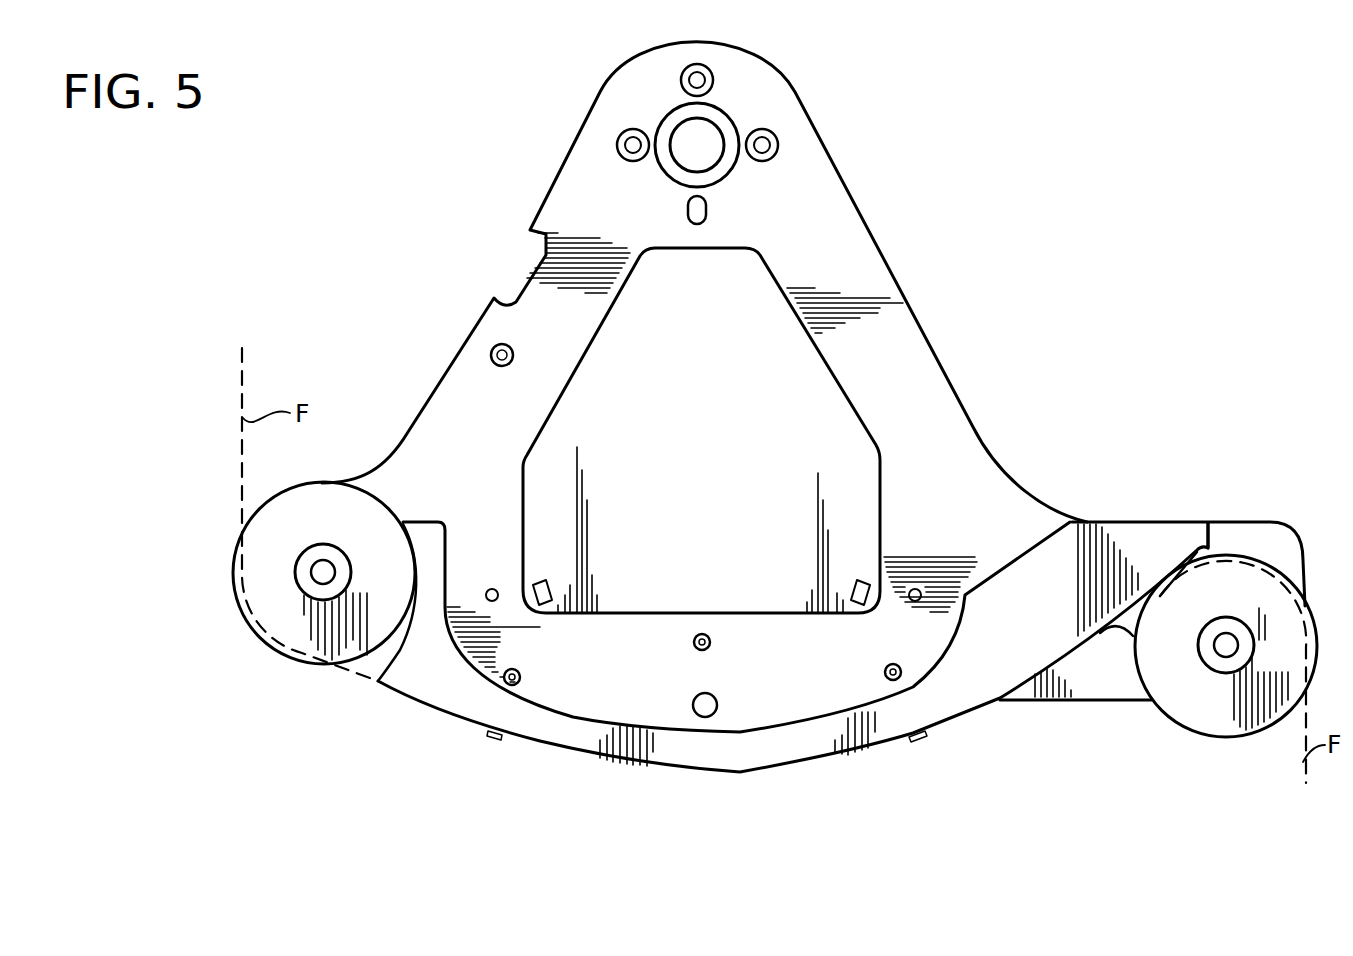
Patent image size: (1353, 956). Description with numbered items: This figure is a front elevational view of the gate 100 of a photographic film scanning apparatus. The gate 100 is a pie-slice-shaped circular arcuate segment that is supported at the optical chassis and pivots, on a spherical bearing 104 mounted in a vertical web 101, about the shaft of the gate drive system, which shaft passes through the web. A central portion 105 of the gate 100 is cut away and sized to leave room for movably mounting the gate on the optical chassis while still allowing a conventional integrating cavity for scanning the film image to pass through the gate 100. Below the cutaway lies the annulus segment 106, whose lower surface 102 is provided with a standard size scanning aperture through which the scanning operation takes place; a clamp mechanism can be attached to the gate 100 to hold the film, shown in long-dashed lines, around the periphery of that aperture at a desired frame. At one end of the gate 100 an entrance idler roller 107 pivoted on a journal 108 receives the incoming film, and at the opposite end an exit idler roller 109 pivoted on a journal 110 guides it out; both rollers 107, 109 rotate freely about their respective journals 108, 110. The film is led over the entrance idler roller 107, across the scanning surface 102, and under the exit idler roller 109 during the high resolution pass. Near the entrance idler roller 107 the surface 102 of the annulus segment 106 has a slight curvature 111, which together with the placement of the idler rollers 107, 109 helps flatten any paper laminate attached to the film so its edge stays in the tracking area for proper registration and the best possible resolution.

The gate 100 is at (912, 158).
The vertical web 101 is at (893, 369).
The lower surface 102 is at (741, 770).
The spherical bearing 104 is at (722, 119).
The central portion 105 is at (725, 504).
The annulus segment 106 is at (792, 733).
The entrance idler roller 107 is at (1210, 716).
The journal 108 is at (1224, 650).
The exit idler roller 109 is at (280, 650).
The journal 110 is at (323, 568).
The slight curvature 111 is at (1178, 553).